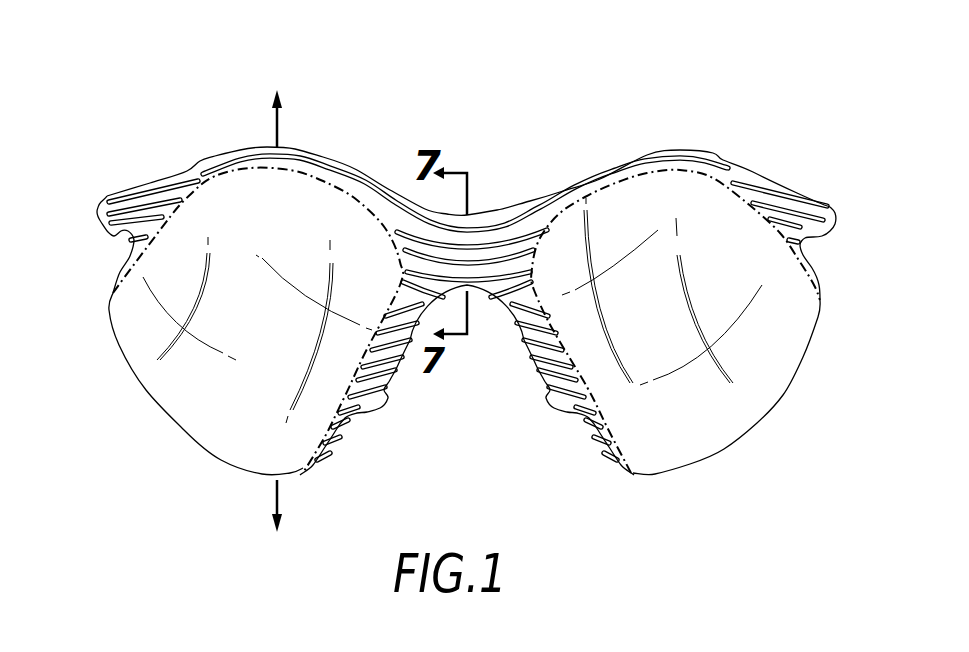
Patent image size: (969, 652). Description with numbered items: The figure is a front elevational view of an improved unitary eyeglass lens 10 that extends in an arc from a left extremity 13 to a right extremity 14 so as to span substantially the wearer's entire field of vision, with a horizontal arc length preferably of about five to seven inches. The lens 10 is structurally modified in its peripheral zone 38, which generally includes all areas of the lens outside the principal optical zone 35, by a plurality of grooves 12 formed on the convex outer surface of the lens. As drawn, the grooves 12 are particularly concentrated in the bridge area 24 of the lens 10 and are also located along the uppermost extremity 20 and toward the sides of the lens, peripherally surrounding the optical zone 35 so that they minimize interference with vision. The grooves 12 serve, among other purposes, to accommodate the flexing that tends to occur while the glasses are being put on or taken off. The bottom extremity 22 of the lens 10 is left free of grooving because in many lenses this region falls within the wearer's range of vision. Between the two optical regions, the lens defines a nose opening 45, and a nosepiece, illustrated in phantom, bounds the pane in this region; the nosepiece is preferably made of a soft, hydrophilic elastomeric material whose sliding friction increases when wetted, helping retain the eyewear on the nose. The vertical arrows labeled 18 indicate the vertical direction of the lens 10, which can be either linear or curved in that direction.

The eyeglass lens 10 is at (724, 118).
The grooves 12 is at (137, 213).
The left extremity 13 is at (133, 303).
The right extremity 14 is at (793, 320).
The vertical axis direction 18 is at (280, 312).
The uppermost extremity 20 is at (300, 190).
The bottom extremity 22 is at (243, 447).
The bridge area 24 is at (483, 240).
The optical zone 35 is at (730, 357).
The peripheral zone 38 is at (630, 167).
The nose opening 45 is at (469, 395).